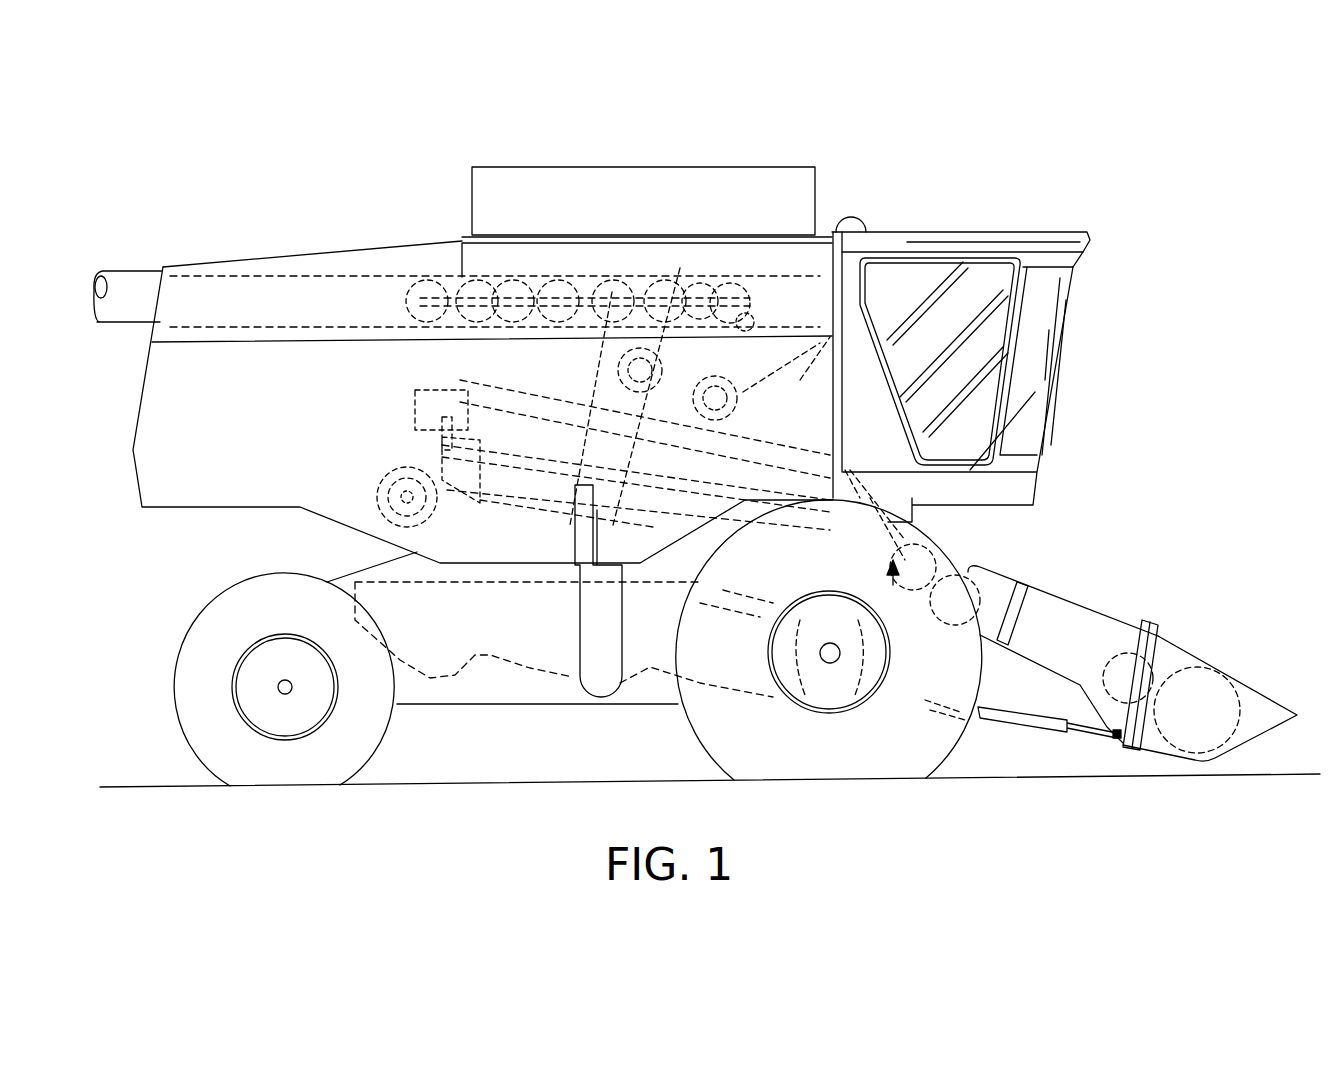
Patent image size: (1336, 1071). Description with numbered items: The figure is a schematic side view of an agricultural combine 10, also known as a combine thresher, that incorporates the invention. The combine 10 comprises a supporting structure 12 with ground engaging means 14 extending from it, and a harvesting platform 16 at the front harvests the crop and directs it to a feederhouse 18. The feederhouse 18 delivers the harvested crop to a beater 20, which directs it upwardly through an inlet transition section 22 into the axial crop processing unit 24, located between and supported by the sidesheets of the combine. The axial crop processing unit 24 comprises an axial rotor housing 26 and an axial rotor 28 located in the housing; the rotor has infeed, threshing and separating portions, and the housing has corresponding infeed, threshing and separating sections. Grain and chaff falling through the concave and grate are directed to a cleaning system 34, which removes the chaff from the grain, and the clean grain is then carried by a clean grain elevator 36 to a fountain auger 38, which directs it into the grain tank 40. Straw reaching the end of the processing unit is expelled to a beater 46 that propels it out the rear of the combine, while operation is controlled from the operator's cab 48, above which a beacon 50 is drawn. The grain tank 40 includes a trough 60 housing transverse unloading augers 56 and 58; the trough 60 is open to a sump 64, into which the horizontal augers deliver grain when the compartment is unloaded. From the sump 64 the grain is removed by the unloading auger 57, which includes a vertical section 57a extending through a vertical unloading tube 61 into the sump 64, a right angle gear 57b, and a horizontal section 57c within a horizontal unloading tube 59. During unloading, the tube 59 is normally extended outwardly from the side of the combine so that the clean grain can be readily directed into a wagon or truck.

The agricultural combine 10 is at (1072, 142).
The supporting structure 12 is at (382, 561).
The ground engaging means 14 is at (388, 733).
The harvesting platform 16 is at (1200, 652).
The feederhouse 18 is at (1058, 596).
The beater 20 is at (955, 550).
The inlet transition section 22 is at (915, 526).
The axial crop processing unit 24 is at (742, 431).
The axial rotor housing 26 is at (520, 377).
The axial rotor 28 is at (458, 374).
The cleaning system 34 is at (541, 582).
The clean grain elevator 36 is at (620, 612).
The fountain auger 38 is at (680, 268).
The grain tank 40 is at (496, 247).
The beater 46 is at (385, 478).
The operator's cab 48 is at (947, 364).
The beacon light 50 is at (862, 218).
The transverse unloading auger 56 is at (823, 340).
The unloading auger 57 is at (590, 287).
The vertical section 57a is at (738, 318).
The right angle gear 57b is at (716, 268).
The horizontal section 57c is at (612, 292).
The transverse unloading auger 58 is at (592, 349).
The horizontal unloading tube 59 is at (127, 270).
The trough 60 is at (779, 374).
The vertical unloading tube 61 is at (752, 318).
The sump 64 is at (710, 472).